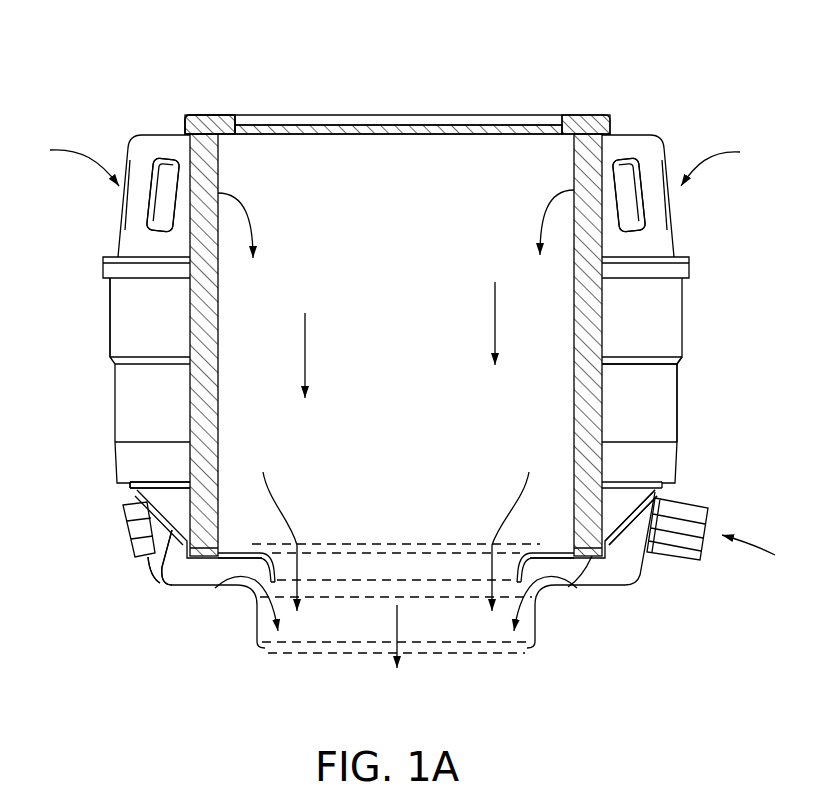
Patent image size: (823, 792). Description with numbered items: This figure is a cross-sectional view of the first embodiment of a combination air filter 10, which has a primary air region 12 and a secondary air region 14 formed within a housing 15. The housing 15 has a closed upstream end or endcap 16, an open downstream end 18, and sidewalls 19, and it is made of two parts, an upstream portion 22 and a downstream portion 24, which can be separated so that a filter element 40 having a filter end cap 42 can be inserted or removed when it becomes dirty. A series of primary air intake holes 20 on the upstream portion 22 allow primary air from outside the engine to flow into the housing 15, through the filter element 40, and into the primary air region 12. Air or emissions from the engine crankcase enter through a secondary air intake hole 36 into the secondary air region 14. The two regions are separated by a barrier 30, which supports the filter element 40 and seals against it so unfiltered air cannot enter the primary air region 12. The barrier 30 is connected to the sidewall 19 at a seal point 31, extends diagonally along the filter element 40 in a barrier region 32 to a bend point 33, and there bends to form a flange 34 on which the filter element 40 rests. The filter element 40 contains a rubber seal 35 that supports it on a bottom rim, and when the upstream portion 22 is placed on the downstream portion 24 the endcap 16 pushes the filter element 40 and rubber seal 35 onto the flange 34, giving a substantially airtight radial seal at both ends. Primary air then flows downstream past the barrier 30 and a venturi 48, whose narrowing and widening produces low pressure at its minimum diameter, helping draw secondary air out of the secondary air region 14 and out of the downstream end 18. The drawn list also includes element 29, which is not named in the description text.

The combination air filter 10 is at (673, 115).
The primary air region 12 is at (460, 176).
The secondary air region 14 is at (624, 589).
The housing 15 is at (693, 363).
The endcap 16 is at (380, 115).
The downstream end 18 is at (298, 655).
The sidewalls 19 is at (108, 310).
The primary air intake holes 20 is at (150, 208).
The upstream portion 22 is at (678, 243).
The downstream portion 24 is at (680, 400).
The side baffle 29 is at (123, 507).
The barrier 30 is at (644, 506).
The seal point 31 is at (128, 491).
The barrier region 32 is at (157, 581).
The bend point 33 is at (177, 565).
The flange 34 is at (235, 556).
The rubber seal 35 is at (592, 558).
The secondary air intake hole 36 is at (693, 535).
The filter element 40 is at (190, 118).
The filter end cap 42 is at (242, 115).
The venturi 48 is at (517, 556).